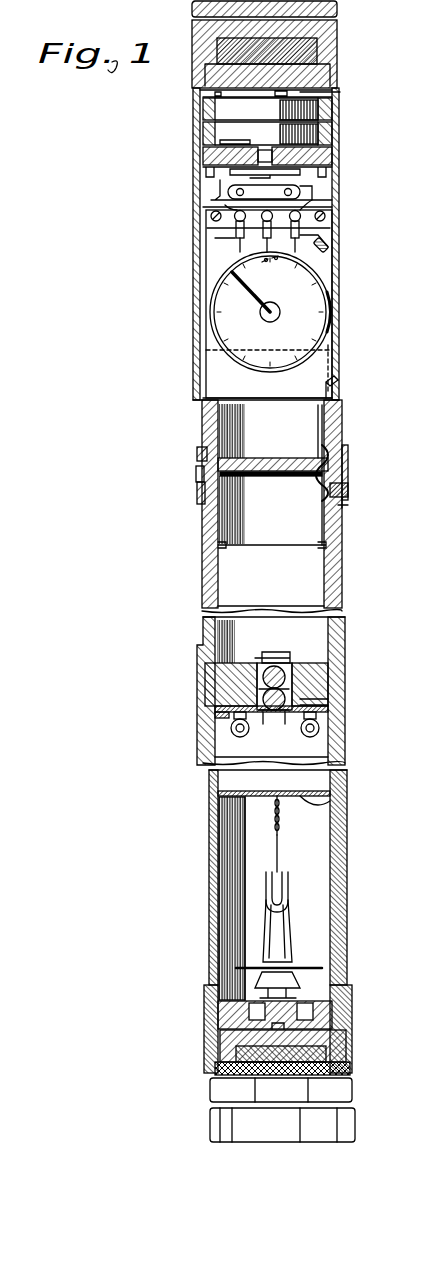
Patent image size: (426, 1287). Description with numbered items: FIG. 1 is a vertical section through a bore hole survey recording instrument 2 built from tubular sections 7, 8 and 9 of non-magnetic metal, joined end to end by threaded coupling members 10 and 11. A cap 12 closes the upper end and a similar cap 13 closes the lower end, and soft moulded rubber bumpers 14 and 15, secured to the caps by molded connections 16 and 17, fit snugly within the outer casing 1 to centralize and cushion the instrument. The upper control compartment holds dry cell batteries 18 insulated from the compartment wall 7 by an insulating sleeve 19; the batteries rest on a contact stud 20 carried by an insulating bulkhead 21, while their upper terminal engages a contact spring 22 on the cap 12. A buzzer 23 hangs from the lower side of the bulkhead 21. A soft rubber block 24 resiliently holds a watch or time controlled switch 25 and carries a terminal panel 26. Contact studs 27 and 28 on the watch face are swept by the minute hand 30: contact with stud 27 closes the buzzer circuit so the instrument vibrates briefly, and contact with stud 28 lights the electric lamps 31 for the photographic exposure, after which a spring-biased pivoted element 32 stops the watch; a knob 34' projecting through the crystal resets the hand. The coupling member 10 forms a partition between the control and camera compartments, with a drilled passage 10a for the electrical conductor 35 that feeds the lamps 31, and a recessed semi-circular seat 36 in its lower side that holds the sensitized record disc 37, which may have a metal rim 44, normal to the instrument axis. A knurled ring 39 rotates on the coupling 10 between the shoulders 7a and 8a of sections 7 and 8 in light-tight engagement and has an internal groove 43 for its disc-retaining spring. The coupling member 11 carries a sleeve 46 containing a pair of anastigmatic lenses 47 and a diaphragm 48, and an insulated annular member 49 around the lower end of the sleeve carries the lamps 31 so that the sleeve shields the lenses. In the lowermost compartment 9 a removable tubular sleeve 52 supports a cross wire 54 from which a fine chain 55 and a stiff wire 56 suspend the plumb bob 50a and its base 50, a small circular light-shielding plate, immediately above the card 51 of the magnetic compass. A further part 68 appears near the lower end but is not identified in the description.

The outer casing 1 is at (410, 32).
The recording instrument 2 is at (343, 587).
The tubular section 7 is at (193, 140).
The shoulder 7a is at (348, 457).
The tubular section 8 is at (202, 583).
The shoulder 8a is at (345, 505).
The tubular section 9 is at (212, 948).
The threaded coupling member 10 is at (200, 455).
The drilled passage 10a is at (348, 493).
The coupling member 11 is at (213, 692).
The cap 12 is at (195, 68).
The cap 13 is at (220, 1062).
The rubber bumper 14 is at (195, 10).
The rubber bumper 15 is at (222, 1120).
The molded connection 16 is at (338, 46).
The molded connection 17 is at (347, 1045).
The dry cell batteries 18 is at (335, 109).
The insulating sleeve 19 is at (338, 130).
The contact stud 20 is at (335, 153).
The bulkhead 21 is at (336, 166).
The contact spring 22 is at (332, 72).
The buzzer 23 is at (305, 190).
The soft rubber block 24 is at (213, 247).
The watch 25 is at (310, 296).
The terminal panel 26 is at (328, 222).
The contact stud 27 is at (213, 262).
The contact stud 28 is at (313, 250).
The minute hand 30 is at (245, 292).
The electric lamps 31 is at (236, 730).
The spring-biased pivoted element 32 is at (320, 708).
The knob 34' is at (329, 315).
The electrical conductor 35 is at (335, 388).
The semi-circular seat 36 is at (318, 450).
The record disc 37 is at (290, 472).
The ring 39 is at (198, 494).
The internal groove 43 is at (198, 472).
The metal rim 44 is at (236, 478).
The sleeve 46 is at (297, 657).
The anastigmatic lenses 47 is at (290, 672).
The diaphragm 48 is at (285, 698).
The insulated annular member 49 is at (232, 715).
The plumb bob base 50 is at (287, 941).
The plumb bob 50a is at (290, 901).
The compass card 51 is at (294, 968).
The tubular sleeve 52 is at (347, 855).
The cross wire 54 is at (332, 803).
The fine chain 55 is at (280, 814).
The stiff wire 56 is at (279, 861).
The bottom block 68 is at (330, 1011).